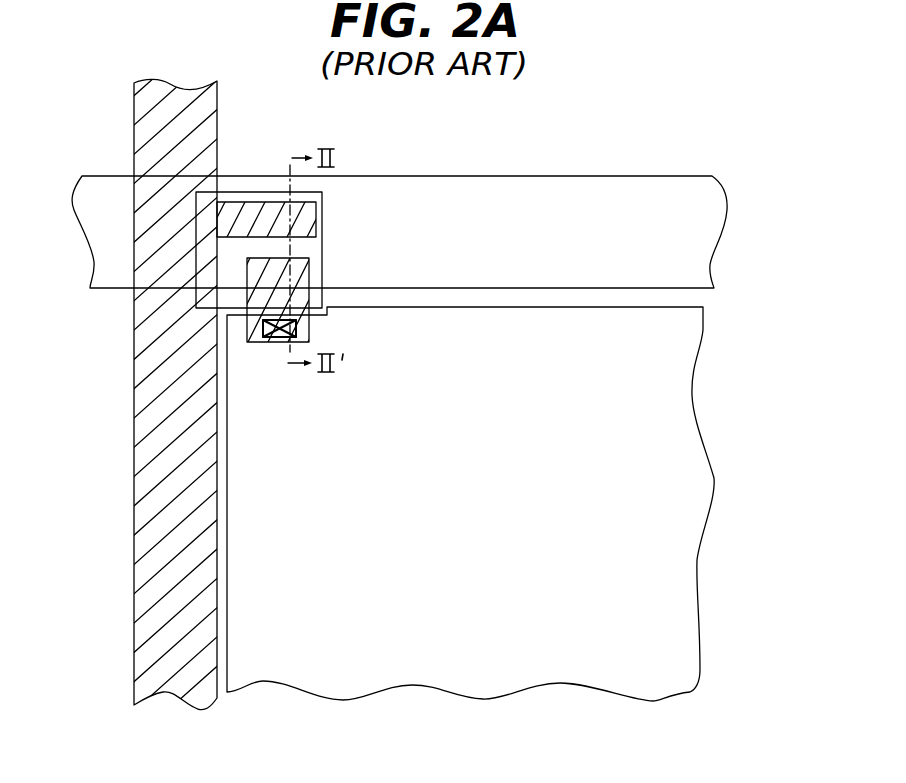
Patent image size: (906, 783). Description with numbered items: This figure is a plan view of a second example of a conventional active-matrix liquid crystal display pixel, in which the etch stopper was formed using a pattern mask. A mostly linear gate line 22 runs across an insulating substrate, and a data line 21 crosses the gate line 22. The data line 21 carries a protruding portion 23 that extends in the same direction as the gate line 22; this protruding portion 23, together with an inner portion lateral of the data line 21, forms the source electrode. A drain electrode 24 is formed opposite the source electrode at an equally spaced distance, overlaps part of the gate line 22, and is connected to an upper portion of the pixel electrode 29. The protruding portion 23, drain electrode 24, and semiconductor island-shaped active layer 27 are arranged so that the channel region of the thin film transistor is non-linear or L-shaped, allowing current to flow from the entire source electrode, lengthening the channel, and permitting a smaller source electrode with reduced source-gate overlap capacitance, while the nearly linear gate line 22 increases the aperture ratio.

The data line 21 is at (142, 553).
The gate line 22 is at (698, 198).
The protruding portion 23 is at (306, 214).
The drain electrode 24 is at (303, 326).
The semiconductor island-shaped active layer 27 is at (322, 248).
The pixel electrode 29 is at (685, 397).